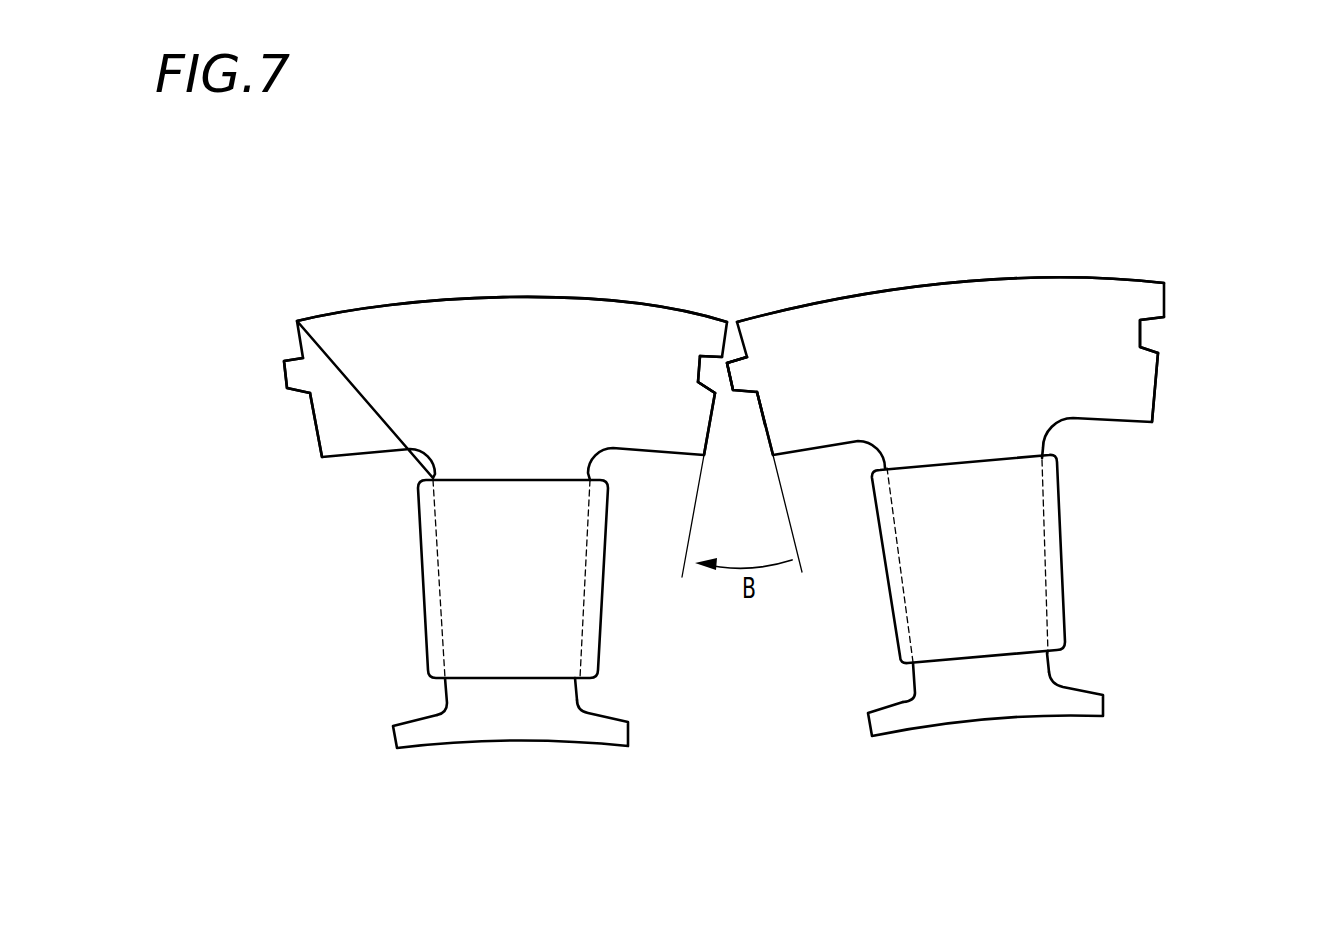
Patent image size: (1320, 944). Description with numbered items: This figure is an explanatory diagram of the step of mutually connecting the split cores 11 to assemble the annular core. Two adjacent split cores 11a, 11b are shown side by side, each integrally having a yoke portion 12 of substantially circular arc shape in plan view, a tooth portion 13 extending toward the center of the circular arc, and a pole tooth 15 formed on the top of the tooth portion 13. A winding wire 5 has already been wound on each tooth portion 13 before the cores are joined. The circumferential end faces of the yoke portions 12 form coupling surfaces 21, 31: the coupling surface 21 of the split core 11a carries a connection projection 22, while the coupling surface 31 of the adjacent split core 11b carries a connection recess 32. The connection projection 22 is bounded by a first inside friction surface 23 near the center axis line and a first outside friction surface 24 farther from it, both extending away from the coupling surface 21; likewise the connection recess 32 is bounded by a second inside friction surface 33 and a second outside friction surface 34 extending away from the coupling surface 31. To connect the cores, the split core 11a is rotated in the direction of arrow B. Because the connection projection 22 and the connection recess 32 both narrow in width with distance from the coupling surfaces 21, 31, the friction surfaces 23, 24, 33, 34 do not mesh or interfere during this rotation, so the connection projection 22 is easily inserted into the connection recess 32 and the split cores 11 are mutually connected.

The split core 11 is at (753, 305).
The split core 11a is at (1119, 248).
The split core 11b is at (378, 246).
The yoke portion 12 is at (462, 327).
The tooth portion 13 is at (458, 620).
The pole tooth 15 is at (487, 732).
The winding wire 5 is at (418, 556).
The coupling surface 21 is at (312, 425).
The connection projection 22 is at (285, 378).
The first inside friction surface 23 is at (758, 418).
The first outside friction surface 24 is at (740, 352).
The coupling surface 31 is at (708, 453).
The connection recess 32 is at (703, 373).
The second inside friction surface 33 is at (706, 384).
The second outside friction surface 34 is at (697, 357).